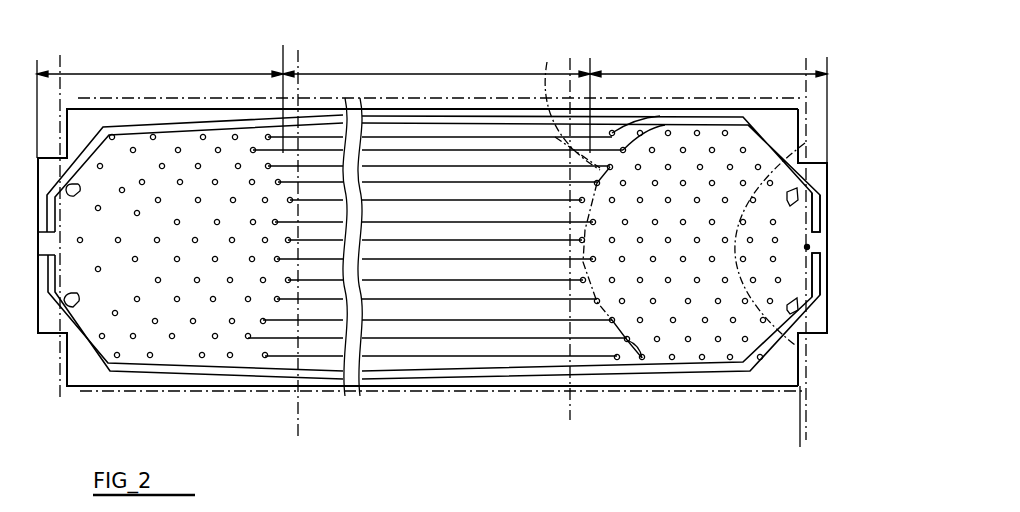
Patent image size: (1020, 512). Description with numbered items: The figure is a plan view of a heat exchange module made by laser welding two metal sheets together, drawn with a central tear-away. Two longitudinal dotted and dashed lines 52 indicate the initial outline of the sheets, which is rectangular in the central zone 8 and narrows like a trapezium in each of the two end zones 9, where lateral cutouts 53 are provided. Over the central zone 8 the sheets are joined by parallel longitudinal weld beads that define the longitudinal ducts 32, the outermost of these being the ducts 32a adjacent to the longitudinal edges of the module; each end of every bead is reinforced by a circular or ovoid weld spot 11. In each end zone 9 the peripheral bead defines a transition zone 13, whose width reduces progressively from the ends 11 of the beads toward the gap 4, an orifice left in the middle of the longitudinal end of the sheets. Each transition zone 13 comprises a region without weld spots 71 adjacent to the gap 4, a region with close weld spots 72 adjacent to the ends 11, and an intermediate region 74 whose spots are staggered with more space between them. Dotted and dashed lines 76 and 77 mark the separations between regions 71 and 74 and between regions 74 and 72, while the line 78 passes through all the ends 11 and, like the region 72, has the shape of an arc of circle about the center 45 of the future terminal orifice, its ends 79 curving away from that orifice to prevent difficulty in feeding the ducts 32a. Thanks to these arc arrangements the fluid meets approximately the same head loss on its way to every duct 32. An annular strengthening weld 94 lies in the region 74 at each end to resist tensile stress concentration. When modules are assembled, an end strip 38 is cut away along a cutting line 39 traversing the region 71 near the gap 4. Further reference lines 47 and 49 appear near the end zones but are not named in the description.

The gap 4 is at (47, 240).
The central zone 8 is at (436, 62).
The end zones 9 is at (432, 103).
The weld spot 11 is at (613, 130).
The transition zone 13 is at (110, 167).
The longitudinal ducts 32 is at (465, 338).
The longitudinal ducts adjacent to the longitudinal edges 32a is at (395, 123).
The end strip 38 is at (52, 318).
The cutting line 39 is at (60, 400).
The center of the terminal orifice 45 is at (808, 247).
The boundary line 47 is at (290, 110).
The plane 49 is at (295, 409).
The longitudinal dotted and dashed lines 52 is at (472, 97).
The lateral cutouts 53 is at (800, 115).
The region without weld spots 71 is at (827, 273).
The region with close weld spots 72 is at (710, 173).
The intermediate region 74 is at (777, 227).
The dotted and dashed line 76 is at (796, 397).
The dotted and dashed line 77 is at (820, 140).
The dotted and dashed line 78 is at (567, 100).
The ends of the arc 79 is at (630, 130).
The annular strengthening weld 94 is at (803, 182).